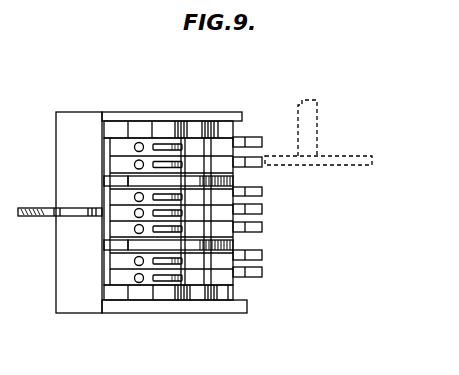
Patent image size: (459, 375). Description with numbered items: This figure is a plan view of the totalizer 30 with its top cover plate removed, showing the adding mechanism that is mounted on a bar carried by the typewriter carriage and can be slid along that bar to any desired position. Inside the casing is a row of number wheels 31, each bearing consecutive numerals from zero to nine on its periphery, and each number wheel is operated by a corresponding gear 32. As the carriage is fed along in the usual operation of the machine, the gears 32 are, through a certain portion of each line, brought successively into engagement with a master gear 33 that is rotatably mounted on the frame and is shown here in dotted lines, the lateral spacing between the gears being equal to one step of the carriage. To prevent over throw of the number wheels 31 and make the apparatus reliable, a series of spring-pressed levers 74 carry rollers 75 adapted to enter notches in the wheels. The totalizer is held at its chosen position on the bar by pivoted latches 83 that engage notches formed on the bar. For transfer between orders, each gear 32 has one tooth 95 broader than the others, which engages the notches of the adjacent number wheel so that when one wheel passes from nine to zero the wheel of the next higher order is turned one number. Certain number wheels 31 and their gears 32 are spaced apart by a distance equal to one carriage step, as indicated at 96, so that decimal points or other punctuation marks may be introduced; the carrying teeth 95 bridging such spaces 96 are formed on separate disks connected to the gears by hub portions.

The totalizer 30 is at (57, 276).
The number wheels 31 is at (232, 165).
The gear 32 is at (262, 271).
The master gear 33 is at (346, 151).
The spring-pressed levers 74 is at (128, 147).
The rollers 75 is at (168, 145).
The pivoted latches 83 is at (42, 218).
The tooth 95 is at (240, 210).
The spaces 96 is at (235, 245).